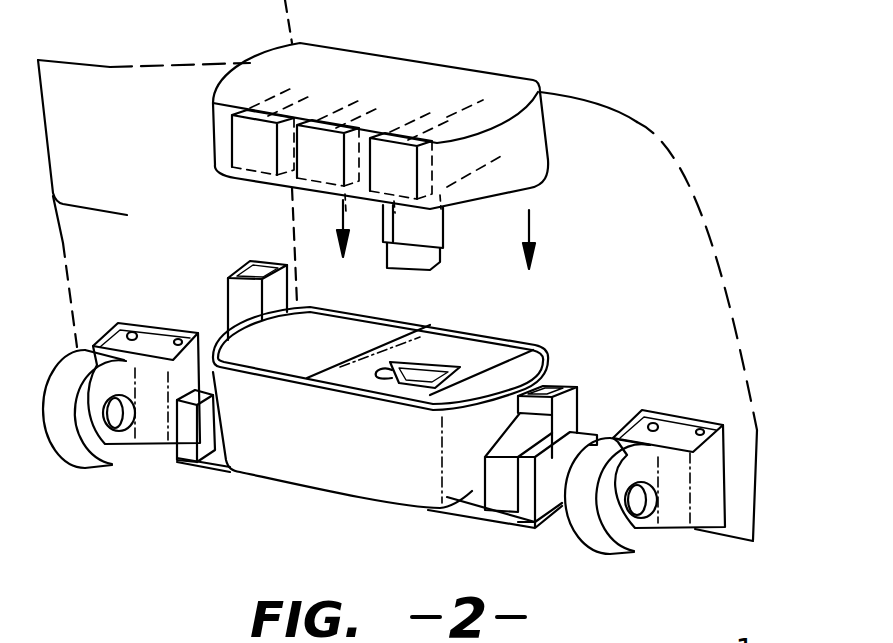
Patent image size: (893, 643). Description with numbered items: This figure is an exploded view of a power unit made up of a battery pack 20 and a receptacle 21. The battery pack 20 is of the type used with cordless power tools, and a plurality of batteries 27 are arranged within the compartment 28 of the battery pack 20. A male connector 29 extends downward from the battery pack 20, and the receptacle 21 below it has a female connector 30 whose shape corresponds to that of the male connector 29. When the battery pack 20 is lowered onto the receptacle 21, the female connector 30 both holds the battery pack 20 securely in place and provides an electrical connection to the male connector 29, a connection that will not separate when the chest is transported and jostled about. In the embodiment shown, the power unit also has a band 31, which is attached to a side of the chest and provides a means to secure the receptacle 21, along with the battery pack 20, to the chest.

The battery pack 20 is at (545, 125).
The receptacle 21 is at (547, 361).
The batteries 27 is at (213, 120).
The compartment 28 is at (277, 70).
The male connector 29 is at (446, 228).
The female connector 30 is at (426, 380).
The band 31 is at (293, 463).